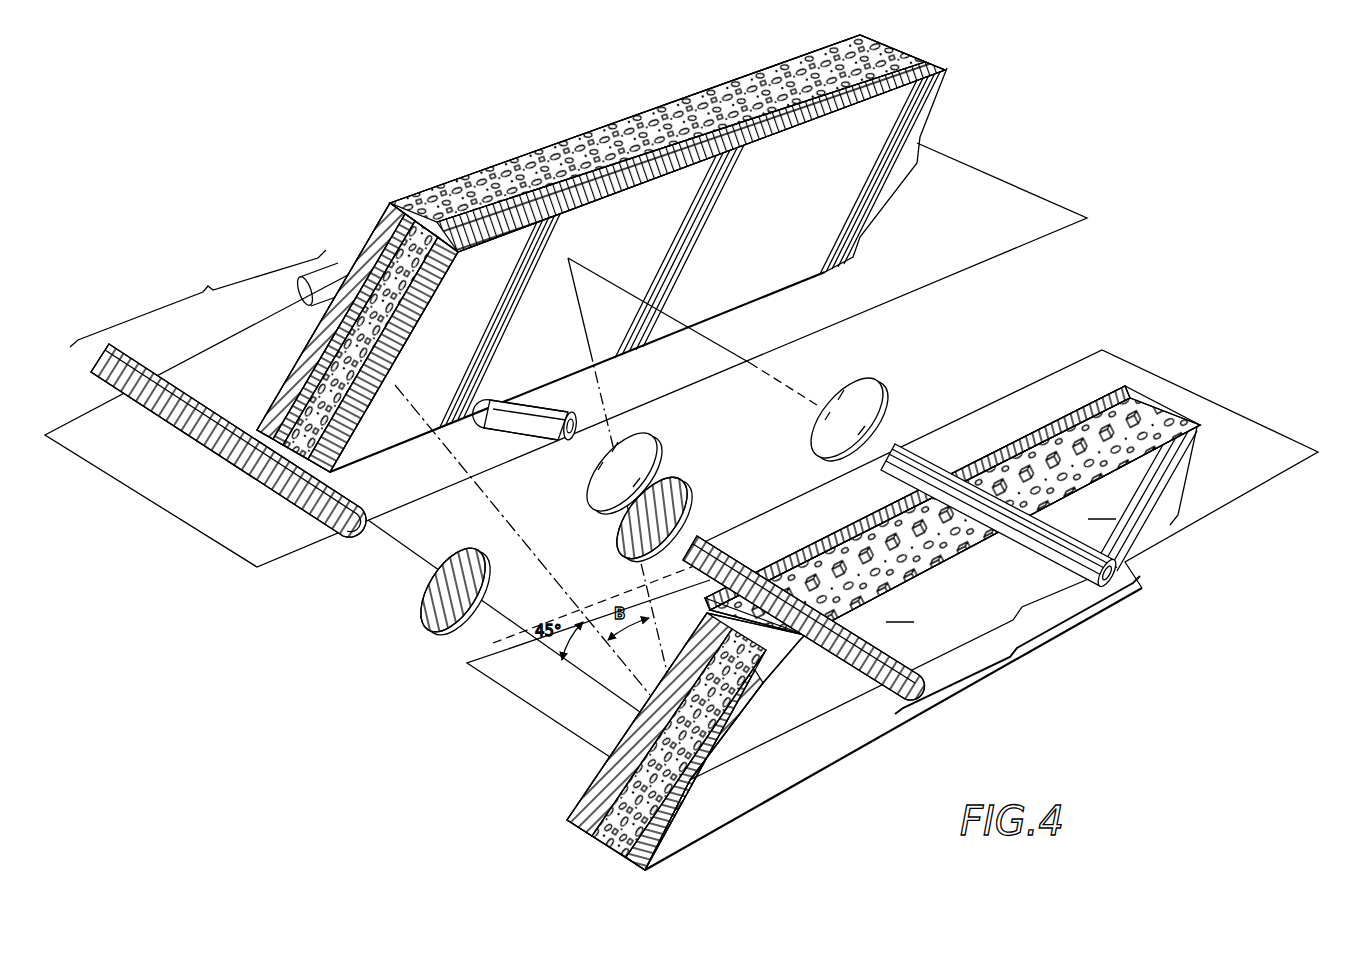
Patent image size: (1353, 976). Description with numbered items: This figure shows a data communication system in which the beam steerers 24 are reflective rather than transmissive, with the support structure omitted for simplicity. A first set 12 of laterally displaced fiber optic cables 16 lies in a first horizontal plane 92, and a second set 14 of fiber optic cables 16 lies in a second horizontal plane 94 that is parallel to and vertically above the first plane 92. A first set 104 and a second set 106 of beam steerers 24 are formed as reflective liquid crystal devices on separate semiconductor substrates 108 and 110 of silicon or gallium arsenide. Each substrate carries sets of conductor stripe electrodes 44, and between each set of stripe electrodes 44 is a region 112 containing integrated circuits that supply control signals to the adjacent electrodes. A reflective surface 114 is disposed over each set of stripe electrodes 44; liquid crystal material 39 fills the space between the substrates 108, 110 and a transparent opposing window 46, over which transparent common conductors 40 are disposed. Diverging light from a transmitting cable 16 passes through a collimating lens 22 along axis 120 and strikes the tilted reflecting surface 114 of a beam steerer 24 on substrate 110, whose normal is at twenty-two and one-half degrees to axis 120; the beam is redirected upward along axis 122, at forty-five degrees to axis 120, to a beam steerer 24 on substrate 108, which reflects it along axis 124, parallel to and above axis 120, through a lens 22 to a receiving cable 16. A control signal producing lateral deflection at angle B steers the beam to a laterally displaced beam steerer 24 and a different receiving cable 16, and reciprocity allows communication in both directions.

The first set of fiber optic cables 12 is at (198, 298).
The second set of fiber optic cables 14 is at (1017, 645).
The fiber optic cable 16 is at (105, 352).
The collimating lens 22 is at (887, 353).
The beam steerer 24 is at (610, 200).
The liquid crystal material 39 is at (238, 462).
The transparent common conductors 40 is at (945, 86).
The conductor stripe electrodes 44 is at (807, 723).
The transparent opposing window 46 is at (282, 490).
The first horizontal plane 92 is at (190, 497).
The second horizontal plane 94 is at (1223, 482).
The first set of beam steerers 104 is at (690, 100).
The second set of beam steerers 106 is at (933, 687).
The semiconductor substrate 108 is at (385, 218).
The semiconductor substrate 110 is at (637, 863).
The region 112 is at (630, 118).
The reflective surface 114 is at (316, 346).
The axis 120 is at (540, 648).
The axis 122 is at (457, 457).
The axis 124 is at (531, 446).